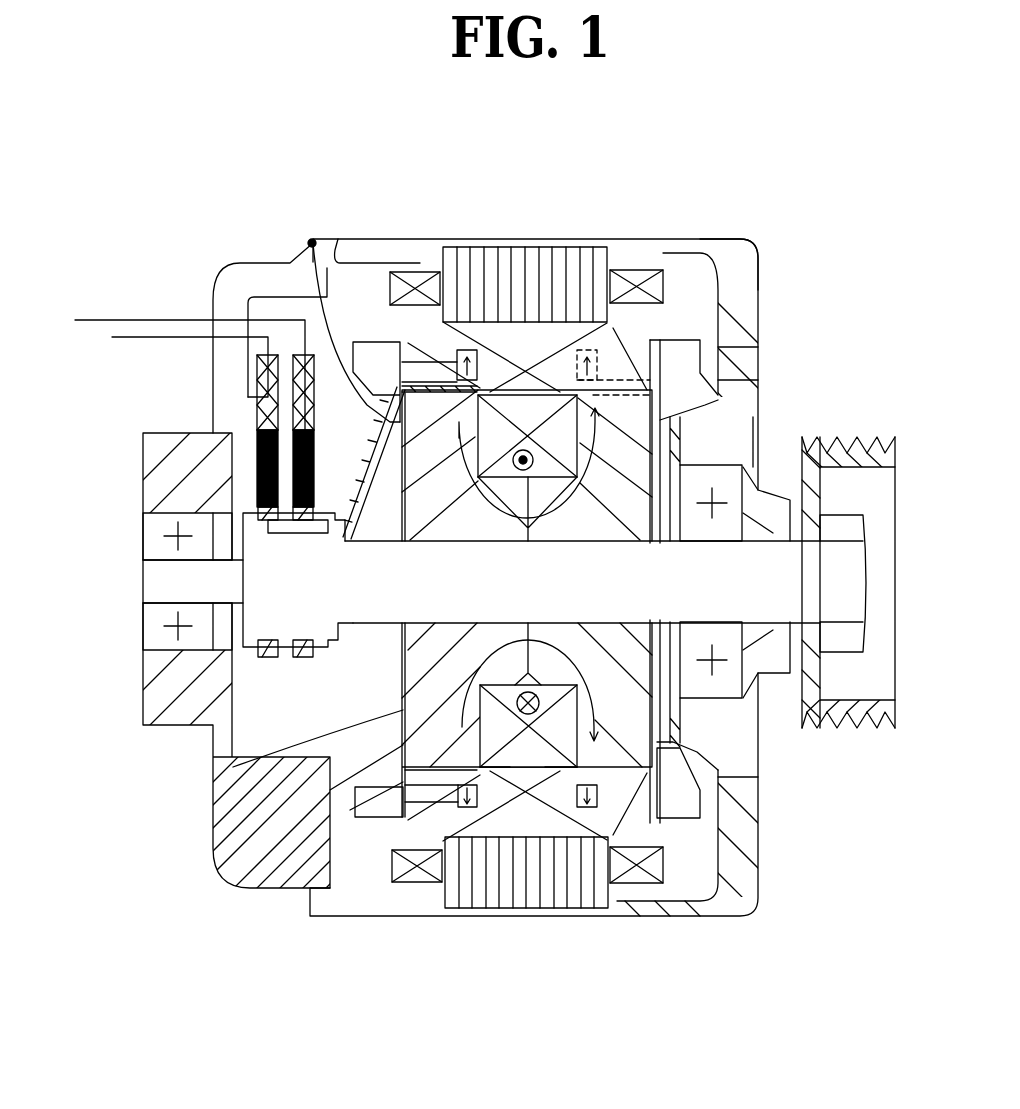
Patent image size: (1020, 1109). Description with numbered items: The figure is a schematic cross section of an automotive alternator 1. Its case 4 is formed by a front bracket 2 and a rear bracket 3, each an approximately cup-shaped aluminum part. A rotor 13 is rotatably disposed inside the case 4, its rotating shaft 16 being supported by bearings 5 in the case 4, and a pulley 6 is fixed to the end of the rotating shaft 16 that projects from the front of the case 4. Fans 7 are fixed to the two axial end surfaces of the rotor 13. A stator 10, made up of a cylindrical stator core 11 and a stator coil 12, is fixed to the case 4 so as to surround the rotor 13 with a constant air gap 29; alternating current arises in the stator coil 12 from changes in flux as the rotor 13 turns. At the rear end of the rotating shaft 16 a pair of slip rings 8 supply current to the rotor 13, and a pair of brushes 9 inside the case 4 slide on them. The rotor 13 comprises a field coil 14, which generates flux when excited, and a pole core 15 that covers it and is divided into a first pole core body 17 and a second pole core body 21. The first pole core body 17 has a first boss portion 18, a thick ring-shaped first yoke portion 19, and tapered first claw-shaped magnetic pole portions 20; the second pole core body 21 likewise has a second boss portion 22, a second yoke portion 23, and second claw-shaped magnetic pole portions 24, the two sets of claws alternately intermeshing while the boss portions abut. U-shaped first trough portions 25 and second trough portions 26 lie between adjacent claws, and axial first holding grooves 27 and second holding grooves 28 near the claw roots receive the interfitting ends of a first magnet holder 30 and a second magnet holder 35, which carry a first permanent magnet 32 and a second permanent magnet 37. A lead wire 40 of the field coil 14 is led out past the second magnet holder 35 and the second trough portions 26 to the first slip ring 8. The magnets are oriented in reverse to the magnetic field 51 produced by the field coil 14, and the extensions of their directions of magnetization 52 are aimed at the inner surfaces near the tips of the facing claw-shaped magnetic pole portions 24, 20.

The automotive alternator 1 is at (198, 152).
The front bracket 2 is at (765, 285).
The rear bracket 3 is at (237, 266).
The case 4 is at (762, 247).
The bearings 5 is at (152, 520).
The pulley 6 is at (855, 440).
The fans 7 is at (688, 363).
The slip rings 8 is at (332, 530).
The brushes 9 is at (294, 432).
The stator 10 is at (527, 925).
The stator core 11 is at (503, 907).
The stator coil 12 is at (640, 900).
The rotor 13 is at (650, 325).
The field coil 14 is at (433, 780).
The pole core 15 is at (526, 267).
The rotating shaft 16 is at (795, 590).
The first pole core body 17 is at (558, 333).
The first boss portion 18 is at (650, 652).
The first yoke portion 19 is at (655, 675).
The first claw-shaped magnetic pole portions 20 is at (548, 890).
The second pole core body 21 is at (497, 333).
The second boss portion 22 is at (470, 651).
The second yoke portion 23 is at (215, 852).
The second claw-shaped magnetic pole portions 24 is at (500, 800).
The first trough portions 25 is at (630, 777).
The second trough portions 26 is at (248, 889).
The first holding grooves 27 is at (630, 797).
The second holding grooves 28 is at (293, 892).
The air gap 29 is at (433, 840).
The first magnet holder 30 is at (560, 348).
The first permanent magnet 32 is at (625, 825).
The second magnet holder 35 is at (408, 343).
The second permanent magnet 37 is at (430, 800).
The lead wire 40 is at (309, 242).
The magnetic field 51 is at (428, 710).
The directions of magnetization 52 is at (457, 355).